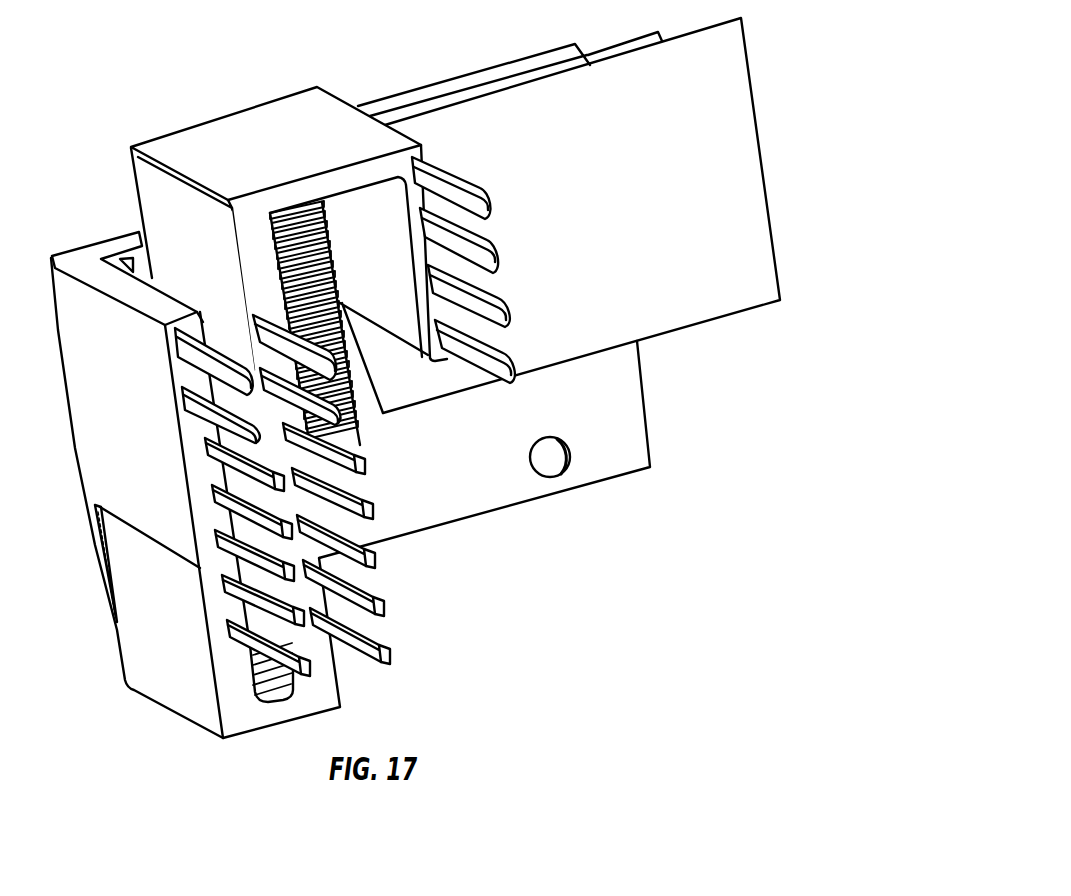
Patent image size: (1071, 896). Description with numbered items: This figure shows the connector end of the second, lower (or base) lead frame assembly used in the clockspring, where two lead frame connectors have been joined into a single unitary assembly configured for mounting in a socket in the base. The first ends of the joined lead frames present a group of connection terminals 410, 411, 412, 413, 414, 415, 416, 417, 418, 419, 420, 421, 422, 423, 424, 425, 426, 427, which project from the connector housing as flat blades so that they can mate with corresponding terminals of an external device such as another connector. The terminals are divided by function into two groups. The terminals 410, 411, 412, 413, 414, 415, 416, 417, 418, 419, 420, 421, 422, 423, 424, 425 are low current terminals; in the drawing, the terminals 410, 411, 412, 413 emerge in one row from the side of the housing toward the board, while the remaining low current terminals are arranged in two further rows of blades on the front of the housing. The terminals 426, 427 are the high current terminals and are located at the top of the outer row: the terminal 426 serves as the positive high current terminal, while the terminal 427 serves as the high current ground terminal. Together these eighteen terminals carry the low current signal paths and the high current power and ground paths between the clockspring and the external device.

The connection terminal 410 is at (492, 198).
The connection terminal 411 is at (503, 250).
The connection terminal 412 is at (508, 305).
The connection terminal 413 is at (516, 358).
The connection terminal 414 is at (245, 312).
The connection terminal 415 is at (350, 425).
The connection terminal 416 is at (366, 470).
The connection terminal 417 is at (376, 516).
The connection terminal 418 is at (382, 565).
The connection terminal 419 is at (388, 608).
The connection terminal 420 is at (224, 582).
The connection terminal 421 is at (391, 652).
The connection terminal 422 is at (229, 627).
The connection terminal 423 is at (217, 537).
The connection terminal 424 is at (214, 492).
The connection terminal 425 is at (207, 446).
The positive high current terminal 426 is at (185, 399).
The high current ground terminal 427 is at (180, 352).